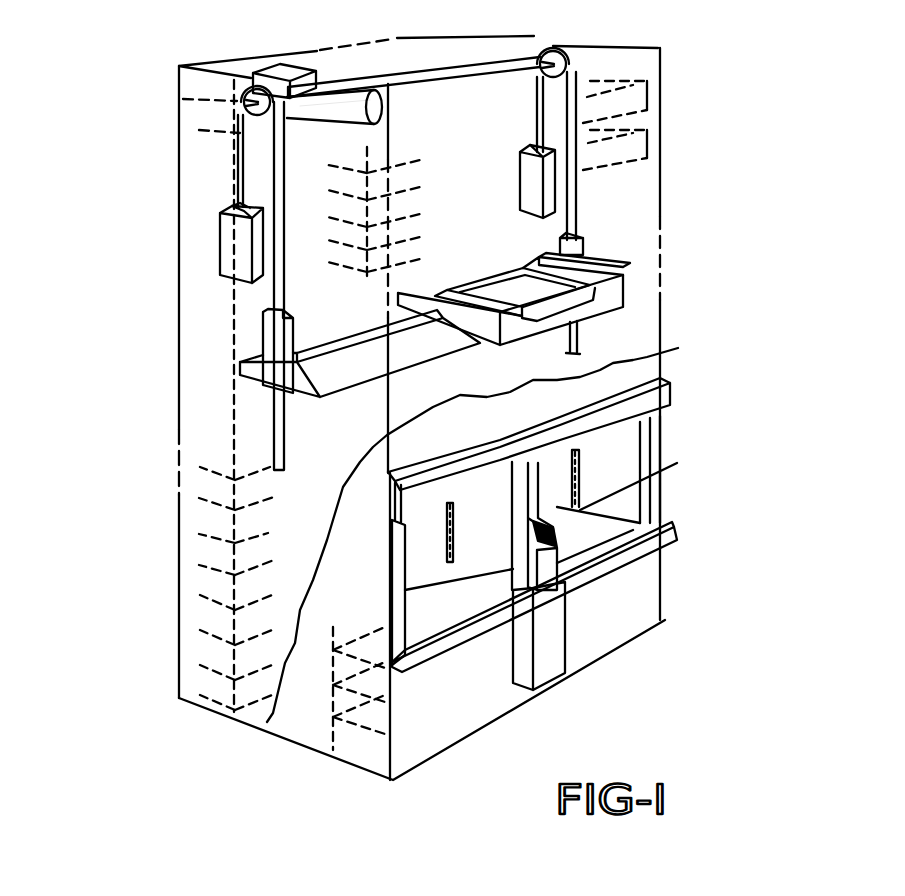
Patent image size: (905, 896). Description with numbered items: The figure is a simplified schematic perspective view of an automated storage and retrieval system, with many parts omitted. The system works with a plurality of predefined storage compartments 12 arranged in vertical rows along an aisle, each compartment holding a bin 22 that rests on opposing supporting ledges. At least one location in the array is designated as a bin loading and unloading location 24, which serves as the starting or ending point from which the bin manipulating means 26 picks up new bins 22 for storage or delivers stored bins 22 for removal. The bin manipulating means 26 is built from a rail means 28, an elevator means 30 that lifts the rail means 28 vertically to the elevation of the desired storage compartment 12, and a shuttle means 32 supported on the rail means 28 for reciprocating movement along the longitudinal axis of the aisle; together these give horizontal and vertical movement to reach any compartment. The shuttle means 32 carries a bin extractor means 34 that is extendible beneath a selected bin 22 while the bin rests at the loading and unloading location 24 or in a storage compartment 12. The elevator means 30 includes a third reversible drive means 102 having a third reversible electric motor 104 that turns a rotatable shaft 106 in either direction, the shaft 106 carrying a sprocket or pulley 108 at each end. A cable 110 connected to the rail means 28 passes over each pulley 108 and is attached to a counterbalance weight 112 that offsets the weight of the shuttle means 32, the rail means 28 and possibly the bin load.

The storage compartment 12 is at (384, 425).
The bin 22 is at (376, 396).
The bin loading and unloading location 24 is at (571, 539).
The bin manipulating means 26 is at (185, 343).
The rail means 28 is at (360, 380).
The elevator means 30 is at (286, 53).
The shuttle means 32 is at (572, 303).
The bin extractor means 34 is at (512, 269).
The third reversible drive means 102 is at (329, 133).
The third reversible electric motor 104 is at (380, 107).
The rotatable shaft 106 is at (414, 48).
The sprocket or pulley 108 is at (365, 62).
The cable 110 is at (411, 271).
The counterbalance weight 112 is at (324, 214).